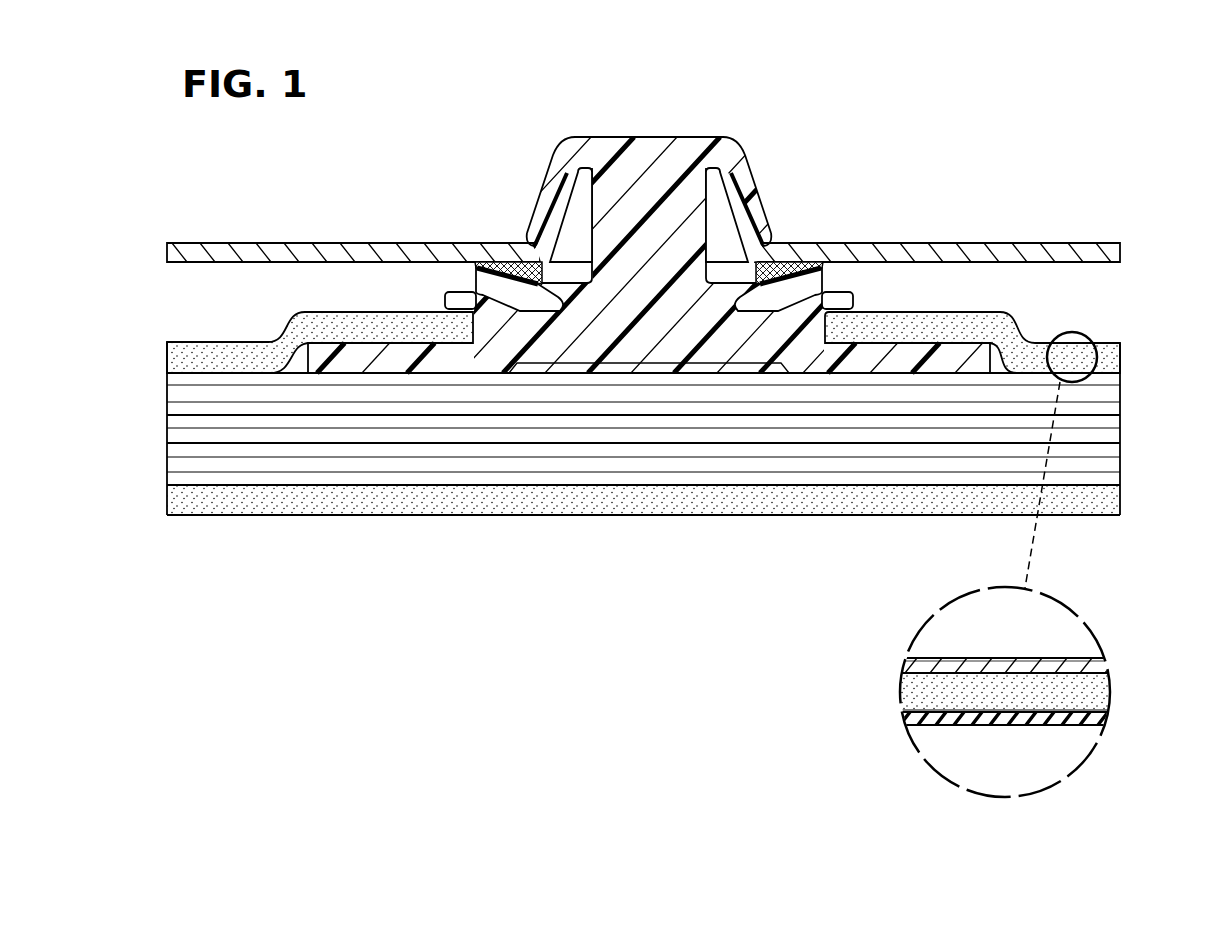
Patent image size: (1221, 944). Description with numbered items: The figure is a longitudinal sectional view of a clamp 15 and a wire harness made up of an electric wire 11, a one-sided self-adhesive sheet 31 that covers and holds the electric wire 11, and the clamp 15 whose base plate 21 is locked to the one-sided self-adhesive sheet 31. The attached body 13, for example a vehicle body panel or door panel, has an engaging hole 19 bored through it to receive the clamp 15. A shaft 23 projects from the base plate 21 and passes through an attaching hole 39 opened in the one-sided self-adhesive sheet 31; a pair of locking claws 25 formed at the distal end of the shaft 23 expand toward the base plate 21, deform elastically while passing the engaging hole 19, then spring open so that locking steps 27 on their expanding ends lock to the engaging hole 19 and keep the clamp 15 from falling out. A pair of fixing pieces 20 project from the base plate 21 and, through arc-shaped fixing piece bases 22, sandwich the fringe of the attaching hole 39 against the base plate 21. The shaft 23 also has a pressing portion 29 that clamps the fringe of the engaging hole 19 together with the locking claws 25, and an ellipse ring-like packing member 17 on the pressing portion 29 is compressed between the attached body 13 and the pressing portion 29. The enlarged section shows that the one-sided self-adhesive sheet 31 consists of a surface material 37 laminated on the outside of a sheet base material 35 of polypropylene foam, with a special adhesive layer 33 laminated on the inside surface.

The electric wire 11 is at (336, 458).
The attached body 13 is at (268, 236).
The clamp 15 is at (699, 127).
The packing member 17 is at (793, 265).
The engaging hole 19 is at (737, 225).
The fixing pieces 20 is at (455, 300).
The base plate 21 is at (392, 360).
The fixing piece bases 22 is at (468, 330).
The shaft 23 is at (580, 232).
The locking claws 25 is at (545, 213).
The locking steps 27 is at (540, 250).
The pressing portion 29 is at (832, 267).
The one-sided self-adhesive sheet 31 is at (1030, 314).
The special adhesive layer 33 is at (1103, 718).
The sheet base material 35 is at (1104, 694).
The surface material 37 is at (1104, 664).
The attaching hole 39 is at (815, 335).